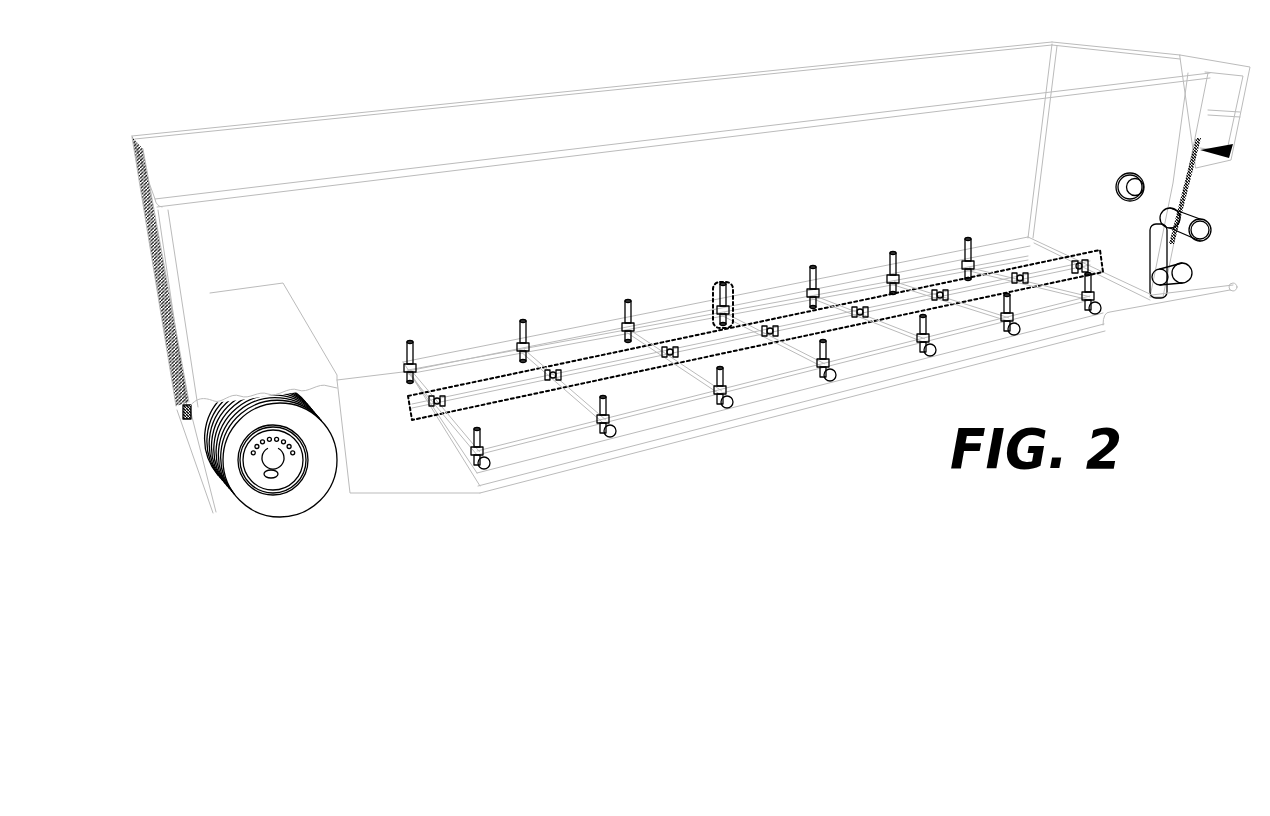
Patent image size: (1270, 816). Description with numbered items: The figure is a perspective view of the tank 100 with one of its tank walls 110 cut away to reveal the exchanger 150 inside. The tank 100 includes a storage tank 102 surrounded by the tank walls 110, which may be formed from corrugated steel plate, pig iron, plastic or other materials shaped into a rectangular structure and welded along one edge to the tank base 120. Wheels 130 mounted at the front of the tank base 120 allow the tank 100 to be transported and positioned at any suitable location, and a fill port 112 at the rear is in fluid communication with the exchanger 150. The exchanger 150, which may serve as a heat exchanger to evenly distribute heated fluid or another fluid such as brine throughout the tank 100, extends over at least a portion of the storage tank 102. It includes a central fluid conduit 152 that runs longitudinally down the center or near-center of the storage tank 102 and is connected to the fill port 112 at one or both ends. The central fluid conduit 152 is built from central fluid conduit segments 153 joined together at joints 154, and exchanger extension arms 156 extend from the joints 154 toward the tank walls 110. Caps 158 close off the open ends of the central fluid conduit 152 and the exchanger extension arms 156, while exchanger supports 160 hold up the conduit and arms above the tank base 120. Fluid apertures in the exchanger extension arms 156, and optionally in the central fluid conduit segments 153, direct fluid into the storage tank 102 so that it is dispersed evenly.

The tank 100 is at (170, 85).
The storage tank 102 is at (372, 126).
The tank walls 110 is at (153, 242).
The fill port 112 is at (1190, 216).
The tank base 120 is at (841, 384).
The wheels 130 is at (279, 508).
The exchanger 150 is at (415, 328).
The central fluid conduit 152 is at (633, 372).
The central fluid conduit segments 153 is at (693, 351).
The joints 154 is at (859, 312).
The exchanger extension arms 156 is at (584, 404).
The caps 158 is at (609, 432).
The exchanger supports 160 is at (724, 283).